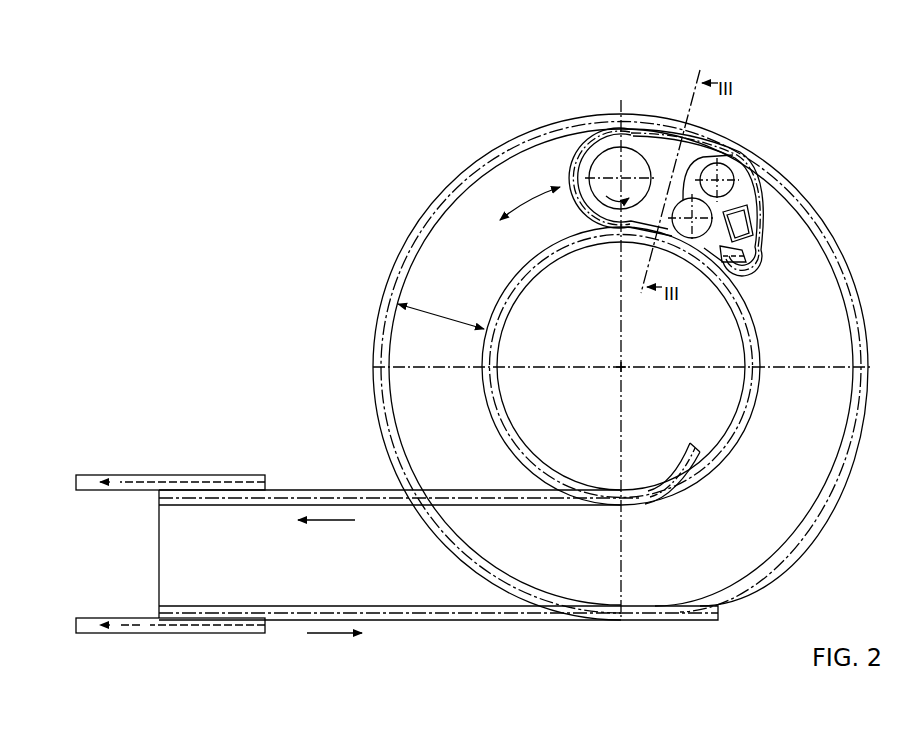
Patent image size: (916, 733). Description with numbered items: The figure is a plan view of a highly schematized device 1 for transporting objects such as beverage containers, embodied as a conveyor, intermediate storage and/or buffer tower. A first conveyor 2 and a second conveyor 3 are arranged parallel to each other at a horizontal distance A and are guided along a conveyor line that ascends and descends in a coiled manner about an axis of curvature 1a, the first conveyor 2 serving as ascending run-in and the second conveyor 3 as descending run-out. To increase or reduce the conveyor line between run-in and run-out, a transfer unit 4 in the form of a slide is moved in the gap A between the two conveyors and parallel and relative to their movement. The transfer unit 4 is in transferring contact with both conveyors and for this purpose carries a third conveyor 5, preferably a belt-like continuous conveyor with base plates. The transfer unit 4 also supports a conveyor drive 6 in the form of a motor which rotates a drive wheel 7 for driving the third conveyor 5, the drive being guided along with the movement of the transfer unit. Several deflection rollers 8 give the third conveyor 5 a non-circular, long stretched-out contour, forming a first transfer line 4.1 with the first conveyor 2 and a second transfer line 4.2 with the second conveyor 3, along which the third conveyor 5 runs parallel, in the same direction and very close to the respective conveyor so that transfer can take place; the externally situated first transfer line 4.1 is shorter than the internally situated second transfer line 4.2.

The device for transporting objects 1 is at (311, 211).
The axis of curvature 1a is at (623, 369).
The first conveyor 2 is at (826, 220).
The second conveyor 3 is at (735, 437).
The transfer unit 4 is at (680, 167).
The first transfer line 4.1 is at (650, 116).
The second transfer line 4.2 is at (705, 268).
The third conveyor 5 is at (760, 162).
The conveyor drive 6 is at (760, 215).
The drive wheel 7 is at (760, 262).
The deflection rollers 8 is at (598, 118).
The horizontal distance A is at (441, 311).